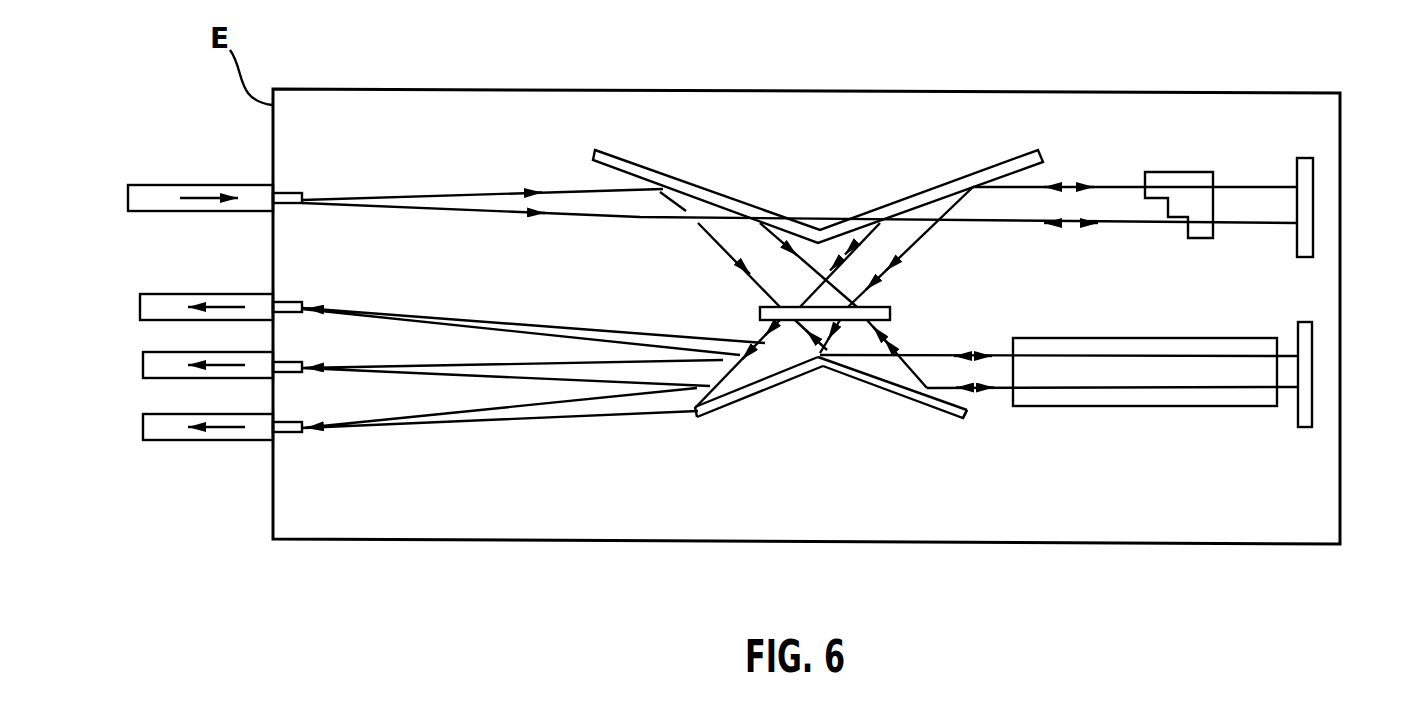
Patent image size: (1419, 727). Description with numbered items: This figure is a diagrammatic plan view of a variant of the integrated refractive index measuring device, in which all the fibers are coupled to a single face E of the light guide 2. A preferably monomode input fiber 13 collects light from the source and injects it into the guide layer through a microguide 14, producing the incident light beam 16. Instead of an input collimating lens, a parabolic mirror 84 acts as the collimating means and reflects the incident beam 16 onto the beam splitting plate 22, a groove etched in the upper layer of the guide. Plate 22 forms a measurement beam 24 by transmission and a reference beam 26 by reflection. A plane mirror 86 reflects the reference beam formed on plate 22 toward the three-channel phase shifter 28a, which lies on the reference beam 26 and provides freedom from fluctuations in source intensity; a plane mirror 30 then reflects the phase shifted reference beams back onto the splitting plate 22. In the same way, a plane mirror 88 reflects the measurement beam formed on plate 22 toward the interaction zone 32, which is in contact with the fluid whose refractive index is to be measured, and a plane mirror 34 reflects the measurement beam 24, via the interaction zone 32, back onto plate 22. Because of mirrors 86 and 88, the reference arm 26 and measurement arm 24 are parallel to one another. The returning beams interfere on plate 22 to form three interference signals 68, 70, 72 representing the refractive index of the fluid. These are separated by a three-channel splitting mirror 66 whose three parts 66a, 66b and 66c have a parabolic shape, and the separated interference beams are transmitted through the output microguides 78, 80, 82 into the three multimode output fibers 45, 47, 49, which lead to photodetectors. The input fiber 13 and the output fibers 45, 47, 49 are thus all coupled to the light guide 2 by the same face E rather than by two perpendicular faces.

The light guide 2 is at (343, 542).
The input fiber 13 is at (152, 192).
The microguide 14 is at (288, 195).
The light beam 16 is at (303, 200).
The beam splitting plate 22 is at (760, 312).
The measurement beam 24 is at (978, 355).
The reference beam 26 is at (1073, 188).
The three-channel phase shifter 28a is at (1172, 176).
The plane mirror 30 is at (1307, 247).
The interaction zone 32 is at (1180, 400).
The plane mirror 34 is at (1308, 418).
The output optical fiber 45 is at (150, 300).
The output optical fiber 47 is at (150, 366).
The output optical fiber 49 is at (148, 432).
The three-channel splitting mirror 66 is at (755, 427).
The part of splitting mirror 66a is at (717, 407).
The part of splitting mirror 66b is at (753, 385).
The part of splitting mirror 66c is at (807, 367).
The interference signal 68 is at (397, 424).
The interference signal 70 is at (437, 370).
The interference signal 72 is at (424, 322).
The output microguide 78 is at (287, 433).
The output microguide 80 is at (293, 362).
The output microguide 82 is at (290, 306).
The parabolic mirror 84 is at (617, 163).
The plane mirror 86 is at (942, 188).
The plane mirror 88 is at (968, 417).